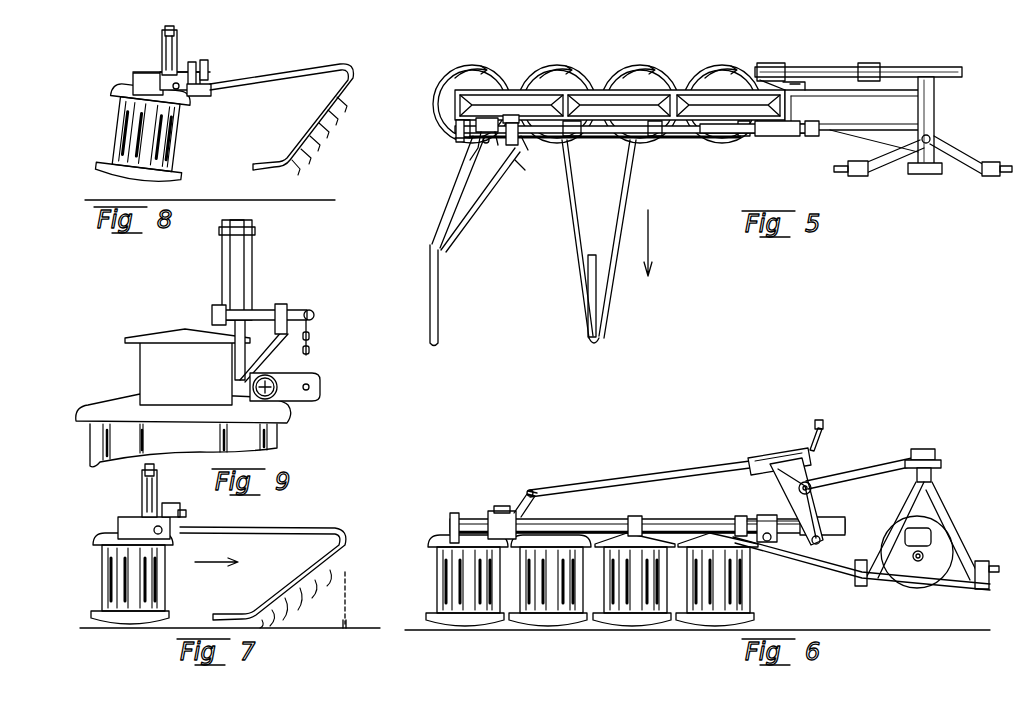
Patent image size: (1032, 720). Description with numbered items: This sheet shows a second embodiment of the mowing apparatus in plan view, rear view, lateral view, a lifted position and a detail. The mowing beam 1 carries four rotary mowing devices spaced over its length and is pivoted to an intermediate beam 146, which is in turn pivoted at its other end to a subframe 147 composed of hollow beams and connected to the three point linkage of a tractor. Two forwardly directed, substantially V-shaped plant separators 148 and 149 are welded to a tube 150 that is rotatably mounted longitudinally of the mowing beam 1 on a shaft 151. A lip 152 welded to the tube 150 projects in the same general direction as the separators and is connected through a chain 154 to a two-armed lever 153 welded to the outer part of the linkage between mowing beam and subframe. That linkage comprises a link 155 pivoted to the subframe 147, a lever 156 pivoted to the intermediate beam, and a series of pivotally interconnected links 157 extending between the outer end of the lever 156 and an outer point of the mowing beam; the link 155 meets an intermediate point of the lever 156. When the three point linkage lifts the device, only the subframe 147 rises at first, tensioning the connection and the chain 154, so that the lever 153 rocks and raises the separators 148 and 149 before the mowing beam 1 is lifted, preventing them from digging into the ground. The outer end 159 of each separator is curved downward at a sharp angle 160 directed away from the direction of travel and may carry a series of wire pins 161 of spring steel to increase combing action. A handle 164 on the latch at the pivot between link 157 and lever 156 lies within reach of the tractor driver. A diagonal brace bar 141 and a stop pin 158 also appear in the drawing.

In FIG. 5, the mowing beam 1 is at (514, 92).
In FIG. 6, the mowing beam 1 is at (678, 525).
In FIG. 9, the mowing beam 1 is at (140, 358).
In FIG. 6, the diagonal brace bar 141 is at (815, 560).
In FIG. 5, the intermediate beam 146 is at (836, 128).
In FIG. 5, the subframe 147 is at (972, 163).
In FIG. 6, the subframe 147 is at (944, 517).
In FIG. 5, the plant separator 148 is at (575, 210).
In FIG. 5, the plant separator 149 is at (466, 222).
In FIG. 5, the tube 150 is at (590, 138).
In FIG. 6, the tube 150 is at (570, 531).
In FIG. 5, the shaft 151 is at (455, 142).
In FIG. 6, the shaft 151 is at (445, 525).
In FIG. 5, the lip 152 is at (470, 165).
In FIG. 9, the lip 152 is at (320, 388).
In FIG. 5, the lever 153 is at (510, 160).
In FIG. 6, the lever 153 is at (498, 510).
In FIG. 9, the lever 153 is at (320, 312).
In FIG. 9, the chain 154 is at (313, 337).
In FIG. 6, the link 155 is at (862, 466).
In FIG. 6, the lever 156 is at (790, 497).
In FIG. 6, the links 157 is at (672, 476).
In FIG. 9, the stop pin 158 is at (214, 312).
In FIG. 7, the outer end of the separators 159 is at (298, 584).
In FIG. 7, the sharp angle 160 is at (292, 600).
In FIG. 7, the wire pins 161 is at (333, 590).
In FIG. 6, the handle 164 is at (822, 424).